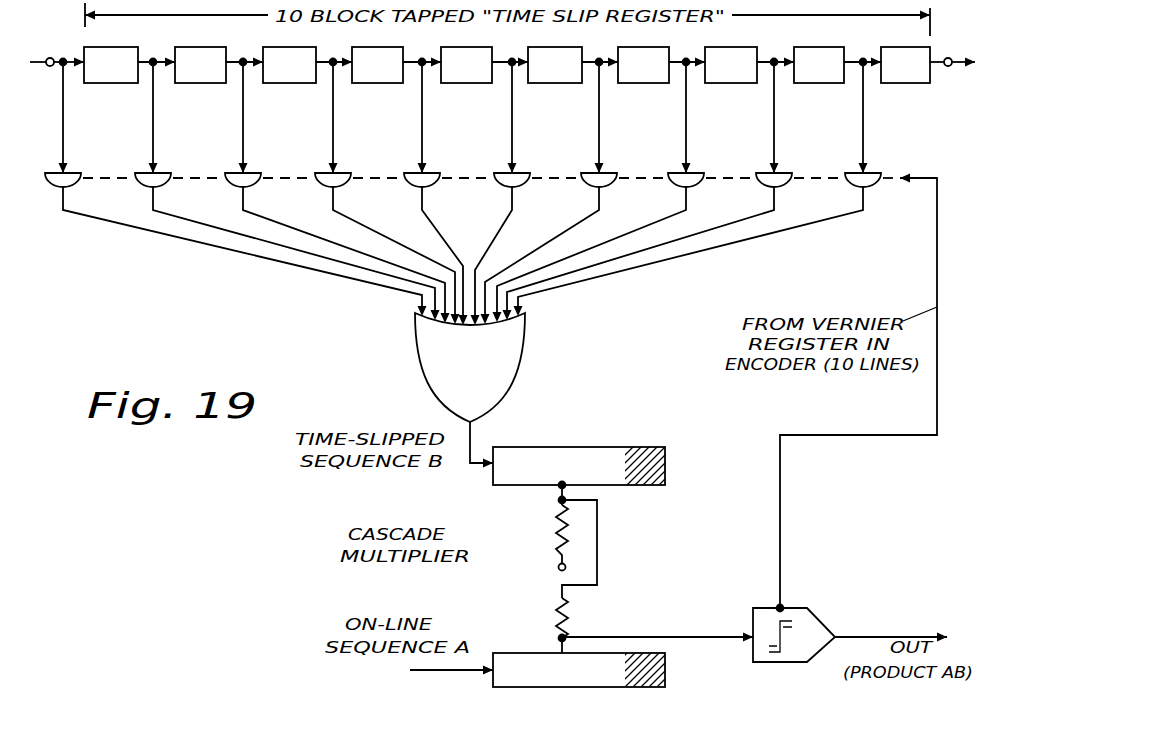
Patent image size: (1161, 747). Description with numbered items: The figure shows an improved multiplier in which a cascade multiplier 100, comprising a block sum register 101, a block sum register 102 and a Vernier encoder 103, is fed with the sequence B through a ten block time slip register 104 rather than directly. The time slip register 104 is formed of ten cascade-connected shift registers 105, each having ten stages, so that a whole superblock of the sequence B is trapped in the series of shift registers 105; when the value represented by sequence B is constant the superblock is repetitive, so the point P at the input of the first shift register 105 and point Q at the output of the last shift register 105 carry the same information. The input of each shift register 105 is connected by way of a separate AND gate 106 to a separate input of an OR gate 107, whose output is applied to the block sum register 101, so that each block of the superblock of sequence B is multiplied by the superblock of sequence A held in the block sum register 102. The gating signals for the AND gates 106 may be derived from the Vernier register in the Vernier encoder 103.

The cascade multiplier 100 is at (652, 547).
The block sum register 101 is at (600, 447).
The block sum register 102 is at (607, 687).
The Vernier encoder 103 is at (808, 608).
The time slip register 104 is at (472, 137).
The shift register 105 is at (108, 83).
The AND gate 106 is at (78, 184).
The OR gate 107 is at (505, 355).